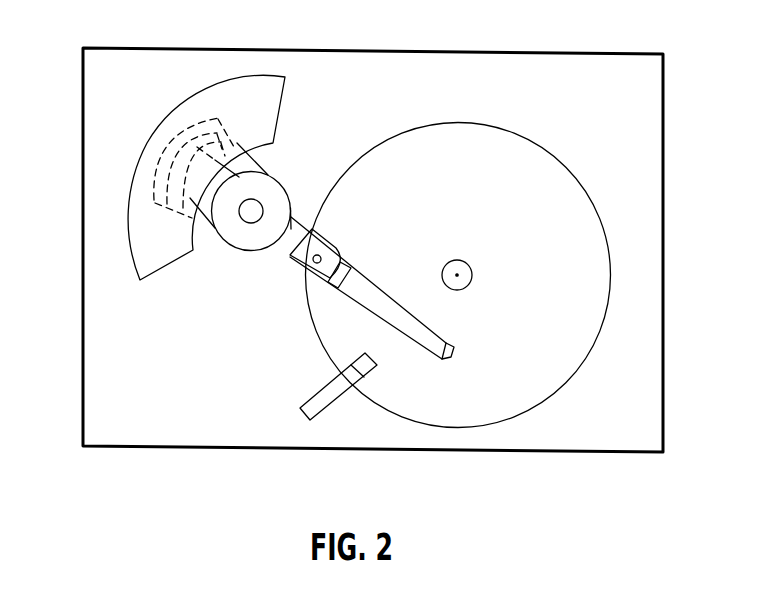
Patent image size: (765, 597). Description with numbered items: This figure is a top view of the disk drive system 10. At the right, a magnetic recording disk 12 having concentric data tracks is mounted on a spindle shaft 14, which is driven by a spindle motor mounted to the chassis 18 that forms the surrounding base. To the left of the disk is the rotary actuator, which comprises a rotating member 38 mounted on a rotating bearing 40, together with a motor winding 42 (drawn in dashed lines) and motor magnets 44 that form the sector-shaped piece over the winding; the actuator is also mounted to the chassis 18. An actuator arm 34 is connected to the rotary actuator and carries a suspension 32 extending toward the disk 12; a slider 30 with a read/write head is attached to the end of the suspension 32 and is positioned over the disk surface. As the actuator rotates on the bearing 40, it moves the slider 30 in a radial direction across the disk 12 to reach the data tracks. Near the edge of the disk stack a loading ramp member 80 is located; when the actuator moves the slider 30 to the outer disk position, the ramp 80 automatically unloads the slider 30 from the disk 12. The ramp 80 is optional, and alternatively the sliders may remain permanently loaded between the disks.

The system 10 is at (182, 475).
The magnetic recording disk 12 is at (442, 171).
The spindle shaft 14 is at (470, 266).
The chassis 18 is at (626, 113).
The slider 30 is at (458, 360).
The suspension 32 is at (363, 290).
The actuator arm 34 is at (291, 218).
The rotating member 38 is at (248, 237).
The rotating bearing 40 is at (248, 204).
The motor winding 42 is at (160, 200).
The motor magnets 44 is at (251, 110).
The loading ramp member 80 is at (316, 390).